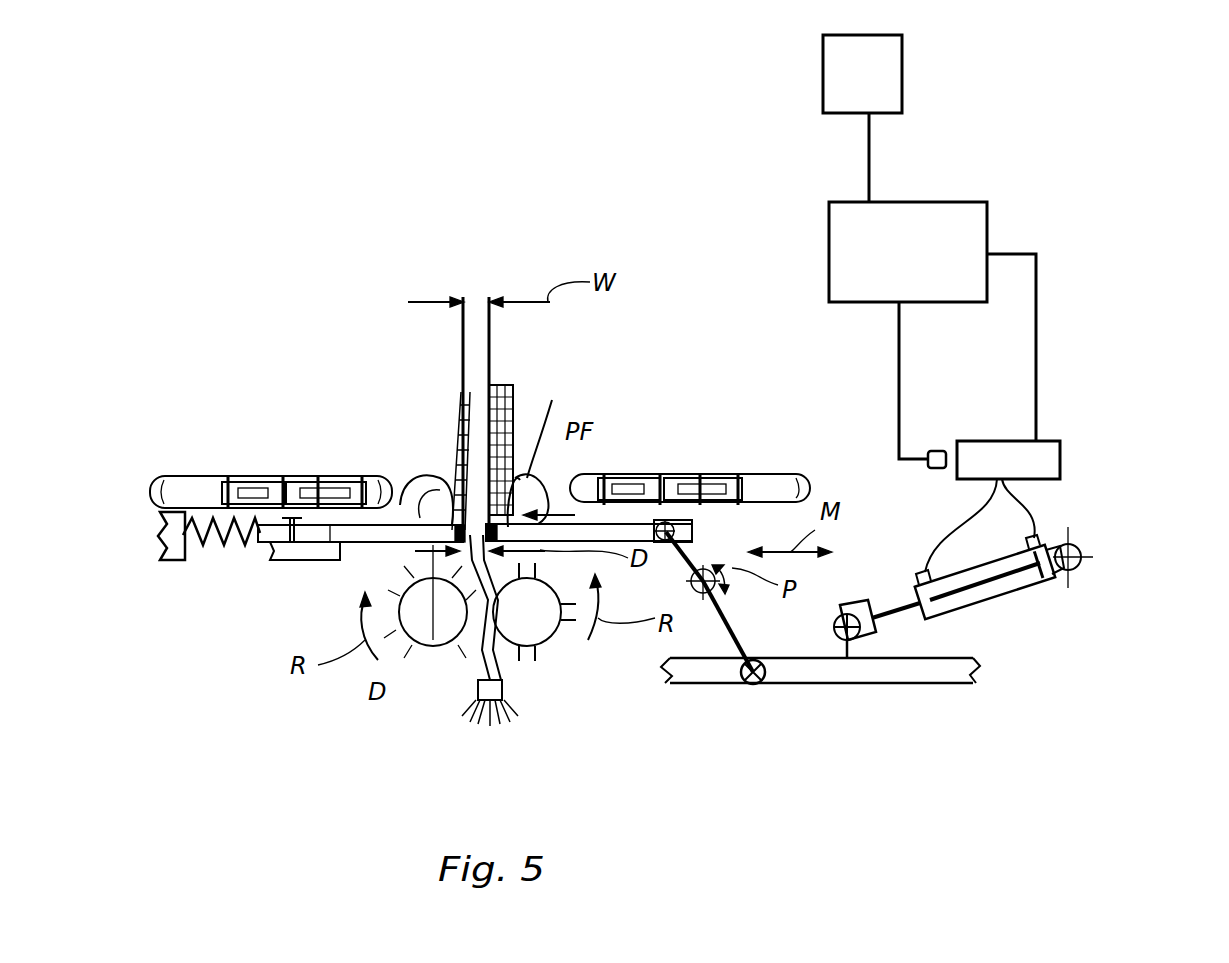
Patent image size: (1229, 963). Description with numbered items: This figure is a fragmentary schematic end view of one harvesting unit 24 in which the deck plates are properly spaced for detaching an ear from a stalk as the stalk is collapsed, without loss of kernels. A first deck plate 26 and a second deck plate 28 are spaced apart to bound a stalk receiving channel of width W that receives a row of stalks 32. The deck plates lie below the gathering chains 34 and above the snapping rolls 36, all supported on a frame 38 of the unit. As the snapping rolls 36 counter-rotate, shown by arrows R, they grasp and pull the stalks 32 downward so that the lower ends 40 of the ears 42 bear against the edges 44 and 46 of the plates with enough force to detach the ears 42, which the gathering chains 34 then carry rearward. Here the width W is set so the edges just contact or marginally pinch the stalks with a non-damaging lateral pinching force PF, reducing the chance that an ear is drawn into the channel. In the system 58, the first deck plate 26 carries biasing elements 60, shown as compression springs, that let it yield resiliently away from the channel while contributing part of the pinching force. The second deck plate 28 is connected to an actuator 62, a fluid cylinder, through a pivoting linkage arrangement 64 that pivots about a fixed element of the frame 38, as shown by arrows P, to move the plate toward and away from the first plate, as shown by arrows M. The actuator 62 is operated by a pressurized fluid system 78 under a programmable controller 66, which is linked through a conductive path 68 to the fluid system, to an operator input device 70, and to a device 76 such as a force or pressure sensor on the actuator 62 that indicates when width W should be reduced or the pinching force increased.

The harvesting unit 24 is at (755, 514).
The first deck plate 26 is at (355, 556).
The second deck plate 28 is at (615, 522).
The stalks 32 is at (462, 395).
The gathering chains 34 is at (243, 480).
The snapping rolls 36 is at (438, 655).
The frame 38 is at (700, 593).
The lower ends of ears 40 is at (400, 478).
The ears 42 is at (514, 388).
The edge of first deck plate 44 is at (422, 478).
The edge of second deck plate 46 is at (558, 431).
The system 58 is at (1100, 546).
The biasing elements 60 is at (192, 480).
The actuator 62 is at (1020, 590).
The pivoting linkage arrangement 64 is at (790, 684).
The controller 66 is at (988, 218).
The conductive path 68 is at (870, 147).
The input device 70 is at (903, 78).
The device 76 is at (937, 451).
The pressurized fluid system 78 is at (1060, 447).